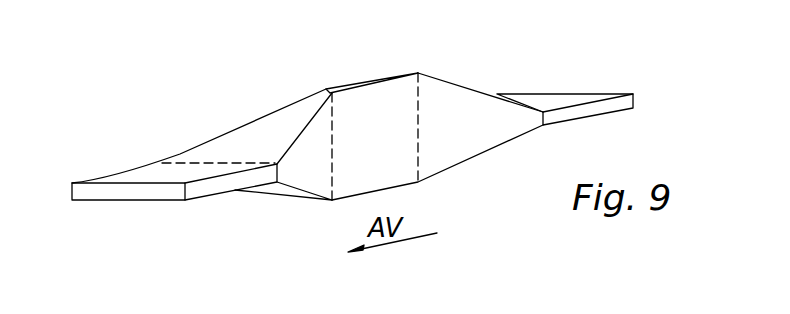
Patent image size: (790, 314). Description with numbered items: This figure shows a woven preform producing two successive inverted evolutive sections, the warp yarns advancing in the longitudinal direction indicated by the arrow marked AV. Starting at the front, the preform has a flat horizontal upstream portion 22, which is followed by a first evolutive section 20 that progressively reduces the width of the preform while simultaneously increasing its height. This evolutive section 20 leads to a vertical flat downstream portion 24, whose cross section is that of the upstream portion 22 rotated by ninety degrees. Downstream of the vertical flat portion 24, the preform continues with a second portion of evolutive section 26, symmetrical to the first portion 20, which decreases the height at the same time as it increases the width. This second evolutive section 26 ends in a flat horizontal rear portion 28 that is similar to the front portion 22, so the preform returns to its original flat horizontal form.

The evolutive section 20 is at (230, 132).
The flat horizontal upstream portion 22 is at (105, 177).
The vertical flat downstream portion 24 is at (358, 80).
The second portion of evolutive section 26 is at (458, 85).
The flat horizontal rear portion 28 is at (575, 93).